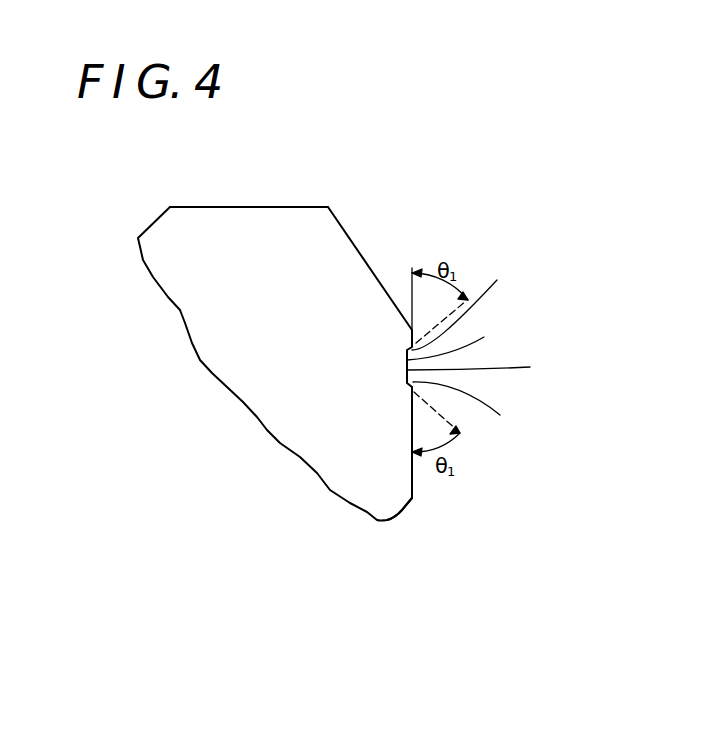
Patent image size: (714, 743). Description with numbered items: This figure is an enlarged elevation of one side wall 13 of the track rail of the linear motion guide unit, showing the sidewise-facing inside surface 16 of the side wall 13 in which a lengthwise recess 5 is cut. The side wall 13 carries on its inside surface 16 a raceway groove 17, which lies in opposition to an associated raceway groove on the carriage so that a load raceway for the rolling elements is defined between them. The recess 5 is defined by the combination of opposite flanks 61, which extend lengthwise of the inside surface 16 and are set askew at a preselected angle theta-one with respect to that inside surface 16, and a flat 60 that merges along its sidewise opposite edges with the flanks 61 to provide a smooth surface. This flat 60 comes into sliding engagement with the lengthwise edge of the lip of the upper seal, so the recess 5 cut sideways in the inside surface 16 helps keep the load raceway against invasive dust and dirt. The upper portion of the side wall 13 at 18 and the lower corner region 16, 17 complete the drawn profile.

The side wall 13 is at (295, 257).
The top surface 18 is at (242, 207).
The inside surface 16 is at (415, 463).
The raceway groove 17 is at (403, 512).
The recess 5 is at (452, 343).
The flat 60 is at (481, 369).
The flank 61 is at (466, 345).